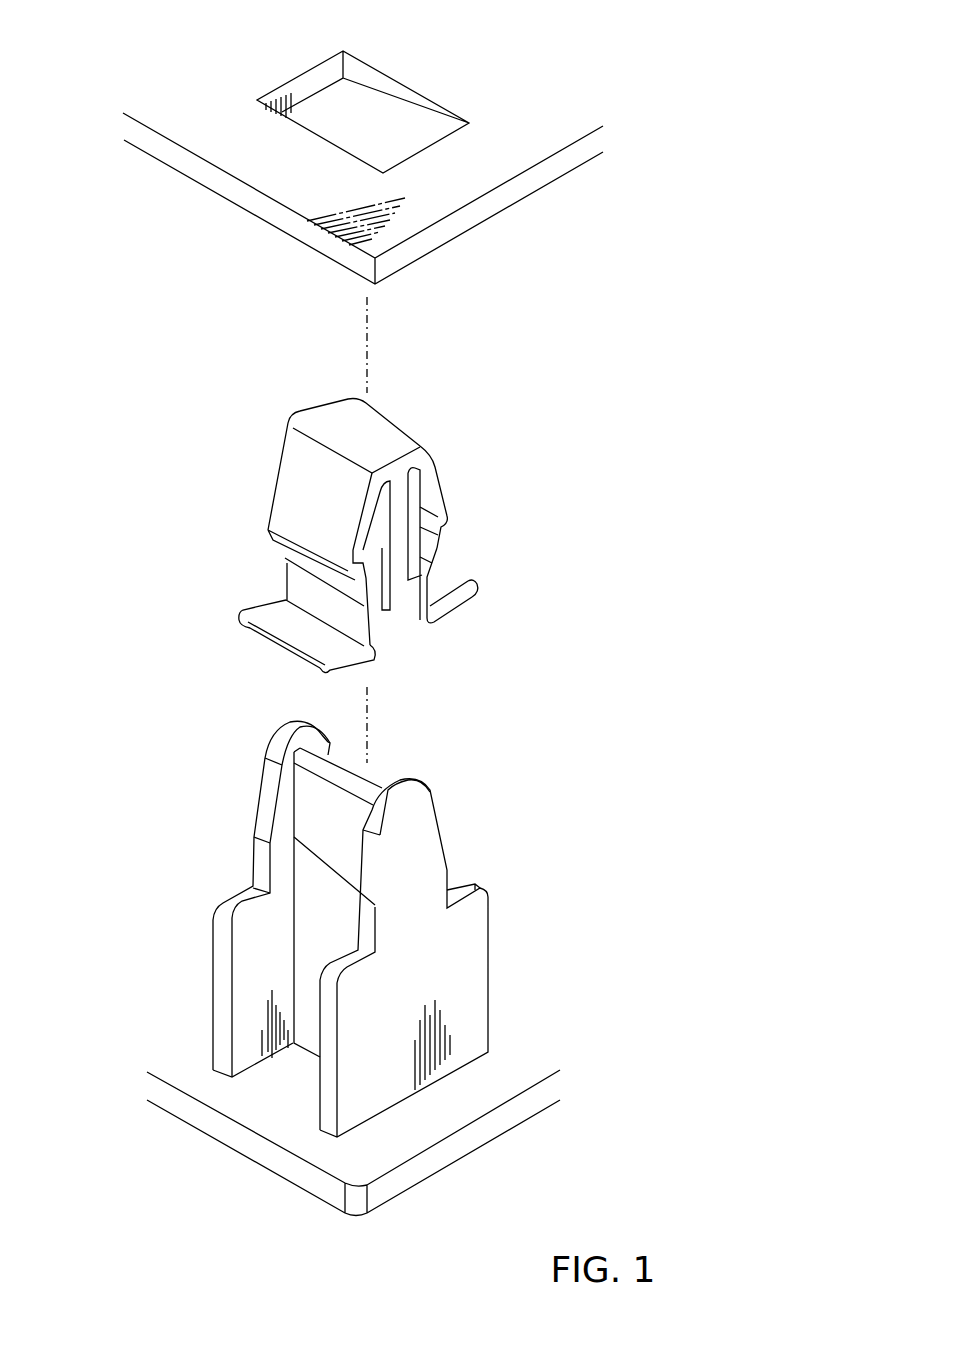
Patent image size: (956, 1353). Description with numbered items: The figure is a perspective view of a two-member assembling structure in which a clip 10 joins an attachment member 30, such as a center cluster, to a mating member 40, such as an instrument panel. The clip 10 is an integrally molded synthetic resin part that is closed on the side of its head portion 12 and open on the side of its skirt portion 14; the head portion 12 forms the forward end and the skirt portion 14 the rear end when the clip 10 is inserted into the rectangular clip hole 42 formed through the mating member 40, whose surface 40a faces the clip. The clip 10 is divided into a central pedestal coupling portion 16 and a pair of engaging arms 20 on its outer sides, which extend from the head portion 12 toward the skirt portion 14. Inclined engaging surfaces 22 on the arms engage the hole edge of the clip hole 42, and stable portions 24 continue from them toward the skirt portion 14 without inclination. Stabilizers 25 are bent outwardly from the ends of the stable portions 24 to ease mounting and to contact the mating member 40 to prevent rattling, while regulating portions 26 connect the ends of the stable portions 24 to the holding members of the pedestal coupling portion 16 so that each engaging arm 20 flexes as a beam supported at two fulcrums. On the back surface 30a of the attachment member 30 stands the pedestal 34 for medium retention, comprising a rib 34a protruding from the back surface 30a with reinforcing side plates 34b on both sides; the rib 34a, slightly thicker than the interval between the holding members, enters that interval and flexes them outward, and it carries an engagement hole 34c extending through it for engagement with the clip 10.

The clip 10 is at (270, 410).
The head portion 12 is at (367, 430).
The skirt portion 14 is at (397, 632).
The pedestal coupling portion 16 is at (417, 488).
The engaging arms 20 is at (303, 488).
The engaging surfaces 22 is at (303, 567).
The stable portions 24 is at (318, 606).
The stabilizers 25 is at (352, 658).
The regulating portions 26 is at (318, 607).
The attachment member 30 is at (465, 1140).
The back surface 30a is at (263, 1108).
The pedestal 34 is at (230, 804).
The rib 34a is at (305, 933).
The reinforcing side plates 34b is at (238, 998).
The engagement hole 34c is at (327, 870).
The mating member 40 is at (480, 216).
The lower surface of panel 40a is at (270, 166).
The clip hole 42 is at (372, 117).